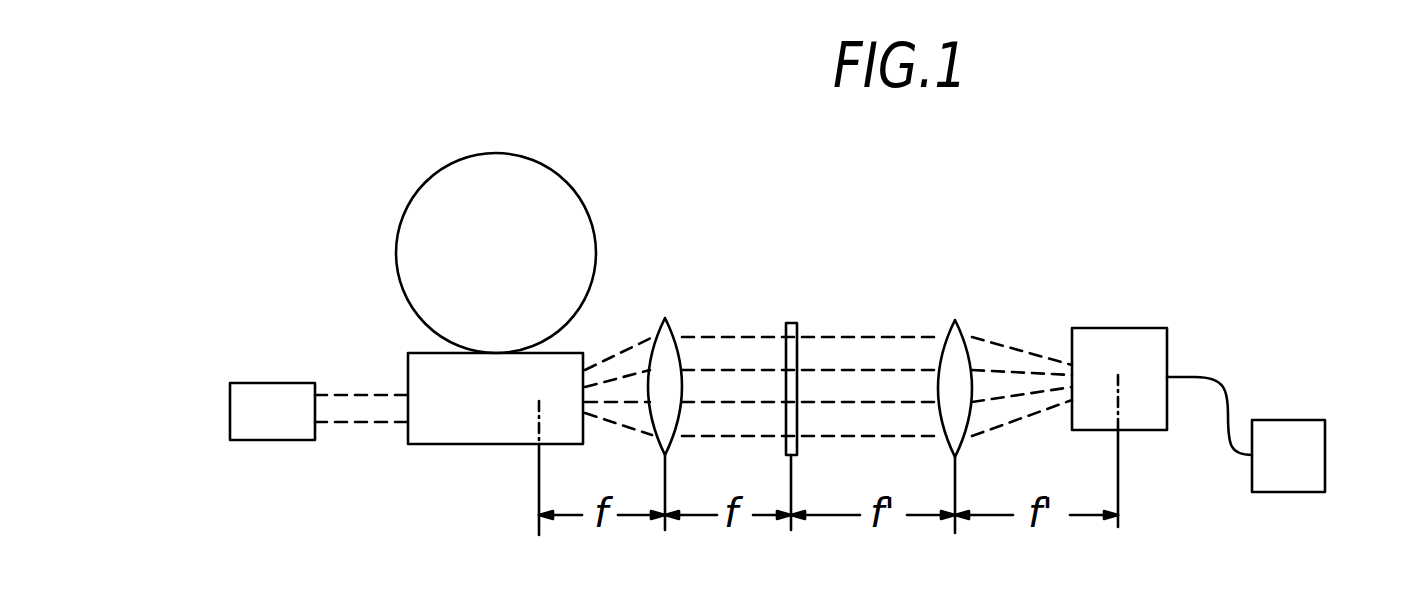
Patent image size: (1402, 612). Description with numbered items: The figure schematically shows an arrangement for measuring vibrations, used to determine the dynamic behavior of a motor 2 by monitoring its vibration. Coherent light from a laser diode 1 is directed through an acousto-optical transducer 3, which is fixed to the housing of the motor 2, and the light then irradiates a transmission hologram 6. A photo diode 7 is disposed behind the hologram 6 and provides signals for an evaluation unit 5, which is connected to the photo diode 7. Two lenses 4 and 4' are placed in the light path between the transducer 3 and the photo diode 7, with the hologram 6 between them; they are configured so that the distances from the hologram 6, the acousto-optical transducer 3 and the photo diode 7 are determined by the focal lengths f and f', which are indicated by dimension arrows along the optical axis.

The laser diode 1 is at (297, 425).
The motor 2 is at (583, 230).
The acousto-optical transducer 3 is at (482, 428).
The lens 4 is at (696, 398).
The lens 4' is at (989, 401).
The evaluation unit 5 is at (1312, 440).
The transmission hologram 6 is at (792, 350).
The photo diode 7 is at (1107, 345).